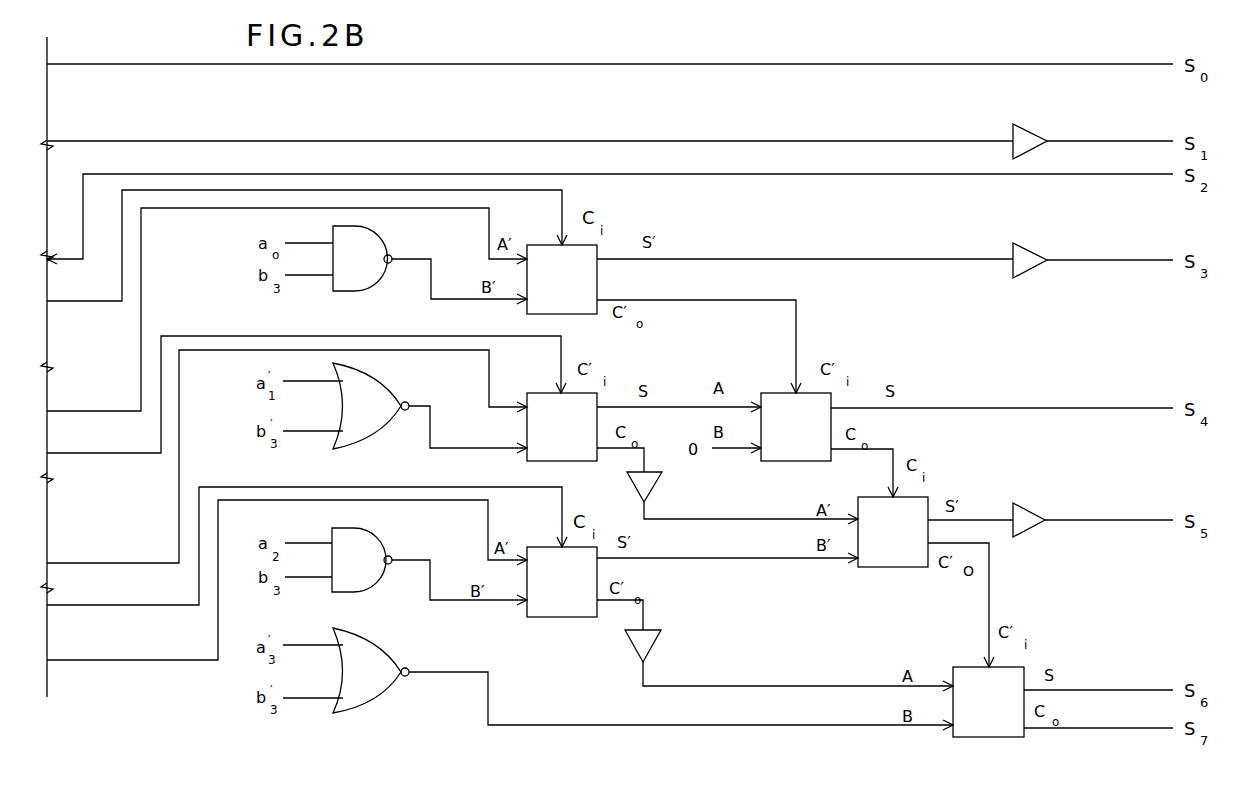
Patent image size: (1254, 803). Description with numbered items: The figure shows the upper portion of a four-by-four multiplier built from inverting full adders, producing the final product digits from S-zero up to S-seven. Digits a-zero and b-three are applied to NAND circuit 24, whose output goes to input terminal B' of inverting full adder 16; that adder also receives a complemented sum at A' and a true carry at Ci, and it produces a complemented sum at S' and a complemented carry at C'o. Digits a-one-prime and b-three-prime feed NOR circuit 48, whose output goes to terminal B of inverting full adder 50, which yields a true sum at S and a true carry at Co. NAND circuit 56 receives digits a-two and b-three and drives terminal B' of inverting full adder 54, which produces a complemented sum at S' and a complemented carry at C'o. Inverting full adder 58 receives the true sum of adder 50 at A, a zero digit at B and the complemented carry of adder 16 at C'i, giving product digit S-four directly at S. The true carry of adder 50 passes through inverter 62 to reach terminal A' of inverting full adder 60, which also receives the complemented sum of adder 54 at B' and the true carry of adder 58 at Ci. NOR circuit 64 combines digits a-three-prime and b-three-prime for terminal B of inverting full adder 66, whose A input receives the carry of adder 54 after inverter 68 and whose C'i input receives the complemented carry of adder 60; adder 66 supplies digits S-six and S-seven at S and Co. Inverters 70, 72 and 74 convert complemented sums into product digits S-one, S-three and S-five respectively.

The inverting full adder 16 is at (580, 292).
The NAND circuit 24 is at (367, 243).
The NOR circuit 48 is at (373, 393).
The inverting full adder 50 is at (576, 443).
The inverting full adder 54 is at (557, 607).
The NAND circuit 56 is at (362, 557).
The inverting full adder 58 is at (804, 450).
The inverting full adder 60 is at (900, 552).
The inverter 62 is at (643, 487).
The NOR circuit 64 is at (368, 653).
The inverting full adder 66 is at (975, 682).
The inverter 68 is at (643, 645).
The inverter 70 is at (1027, 140).
The inverter 72 is at (1032, 258).
The inverter 74 is at (1027, 515).